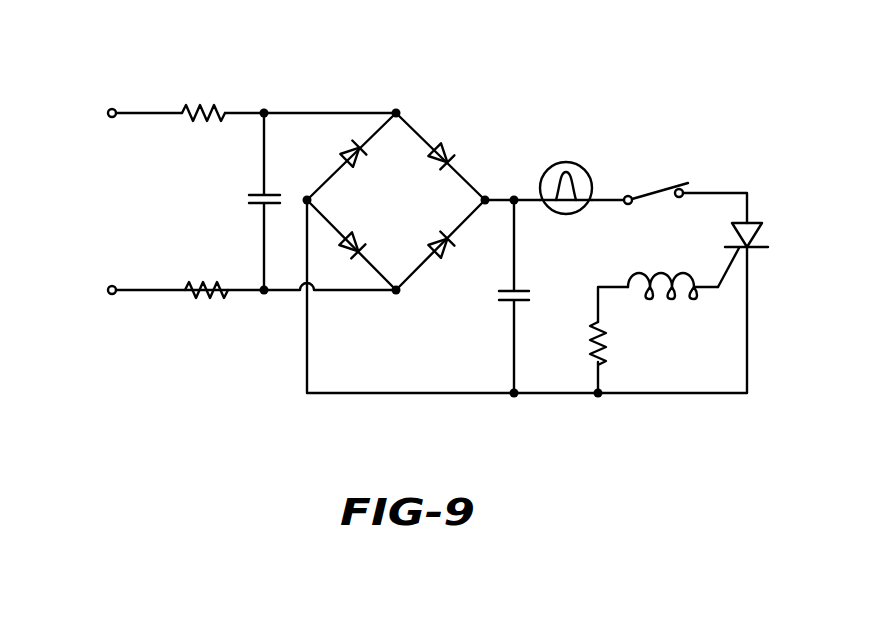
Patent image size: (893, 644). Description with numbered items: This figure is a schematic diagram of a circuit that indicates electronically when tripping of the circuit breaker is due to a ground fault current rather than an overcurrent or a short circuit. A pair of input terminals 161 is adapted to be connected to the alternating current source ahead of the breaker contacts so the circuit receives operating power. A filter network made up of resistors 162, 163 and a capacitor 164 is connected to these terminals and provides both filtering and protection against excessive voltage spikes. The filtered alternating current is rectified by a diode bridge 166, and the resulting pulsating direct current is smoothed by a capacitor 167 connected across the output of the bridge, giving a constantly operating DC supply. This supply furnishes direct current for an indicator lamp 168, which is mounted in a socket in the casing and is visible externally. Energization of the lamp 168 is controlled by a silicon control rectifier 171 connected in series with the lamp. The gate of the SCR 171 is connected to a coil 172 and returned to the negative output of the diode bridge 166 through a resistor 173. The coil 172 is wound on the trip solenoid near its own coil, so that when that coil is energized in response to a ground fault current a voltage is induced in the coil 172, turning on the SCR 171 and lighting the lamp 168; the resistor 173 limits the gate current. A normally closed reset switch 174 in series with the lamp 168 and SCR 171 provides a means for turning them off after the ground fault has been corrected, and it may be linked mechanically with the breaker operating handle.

The input terminals 161 is at (108, 112).
The resistor 162 is at (210, 100).
The resistor 163 is at (212, 258).
The capacitor 164 is at (248, 199).
The diode bridge 166 is at (414, 136).
The capacitor 167 is at (497, 298).
The indicator lamp 168 is at (580, 175).
The silicon control rectifier 171 is at (762, 232).
The coil 172 is at (683, 255).
The resistor 173 is at (610, 342).
The reset switch 174 is at (652, 188).